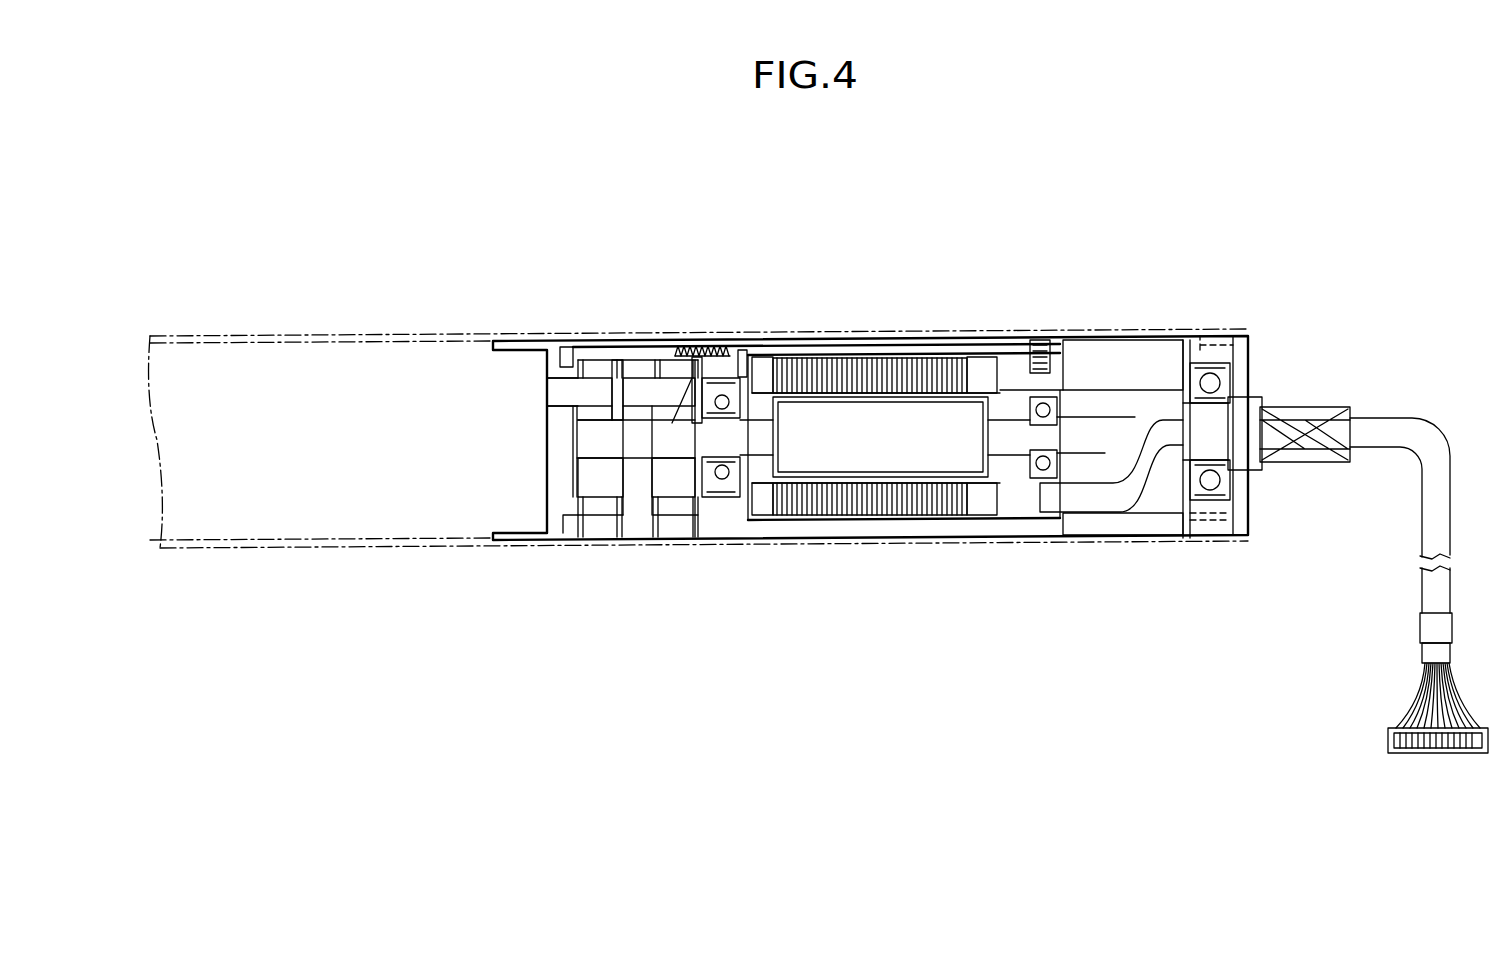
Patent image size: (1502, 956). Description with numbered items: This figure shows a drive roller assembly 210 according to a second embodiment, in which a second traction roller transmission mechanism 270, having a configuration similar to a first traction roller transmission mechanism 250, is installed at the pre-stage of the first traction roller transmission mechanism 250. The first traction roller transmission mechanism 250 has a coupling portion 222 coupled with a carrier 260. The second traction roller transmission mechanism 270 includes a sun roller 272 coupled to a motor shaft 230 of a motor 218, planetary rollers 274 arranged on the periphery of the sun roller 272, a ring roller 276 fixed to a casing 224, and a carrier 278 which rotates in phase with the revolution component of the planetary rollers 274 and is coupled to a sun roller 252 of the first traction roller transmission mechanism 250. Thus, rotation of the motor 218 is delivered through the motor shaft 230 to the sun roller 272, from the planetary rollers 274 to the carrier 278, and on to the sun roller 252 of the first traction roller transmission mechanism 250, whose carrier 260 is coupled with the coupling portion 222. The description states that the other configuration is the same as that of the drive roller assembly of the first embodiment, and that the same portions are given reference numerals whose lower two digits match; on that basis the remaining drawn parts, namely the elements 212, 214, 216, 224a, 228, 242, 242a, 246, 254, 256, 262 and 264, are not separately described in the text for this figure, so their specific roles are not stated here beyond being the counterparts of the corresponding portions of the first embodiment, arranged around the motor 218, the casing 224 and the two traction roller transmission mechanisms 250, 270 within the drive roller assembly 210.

The drive roller assembly 210 is at (1092, 222).
The pipe 212 is at (384, 280).
The inner wall of pipe 214 is at (270, 334).
The drive unit 216 is at (870, 636).
The motor 218 is at (843, 545).
The coupling portion 222 is at (517, 545).
The casing 224 is at (1005, 345).
The output shaft sleeve 224a is at (1327, 407).
The bearing 228 is at (722, 402).
The motor shaft 230 is at (940, 450).
The end cap 242 is at (1245, 338).
The shaft boss 242a is at (1255, 410).
The bearing 246 is at (1205, 383).
The first traction roller transmission mechanism 250 is at (698, 563).
The sun roller 252 is at (562, 442).
The gear plate 254 is at (585, 358).
The lower plate 256 is at (602, 523).
The carrier 260 is at (548, 415).
The gear 262 is at (596, 348).
The upper gear 264 is at (548, 388).
The second traction roller transmission mechanism 270 is at (665, 573).
The sun roller 272 is at (708, 350).
The planetary rollers 274 is at (673, 423).
The ring roller 276 is at (676, 522).
The carrier 278 is at (628, 362).